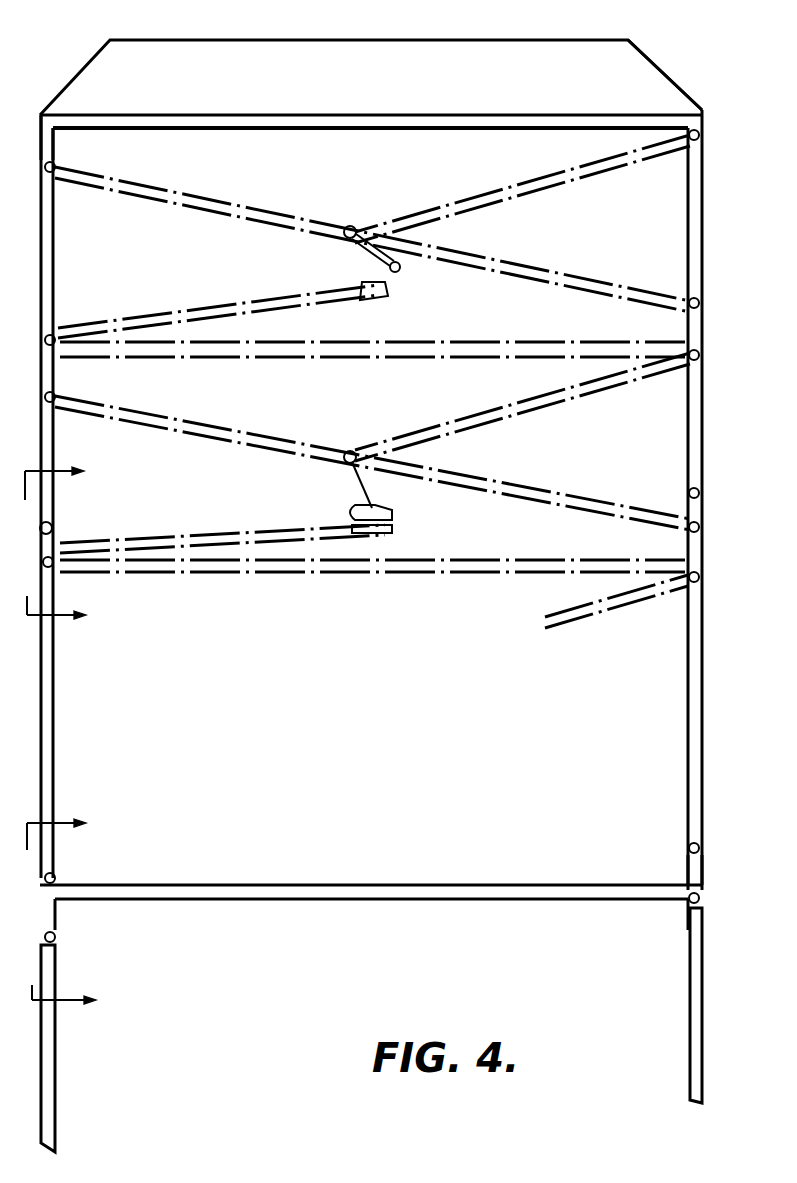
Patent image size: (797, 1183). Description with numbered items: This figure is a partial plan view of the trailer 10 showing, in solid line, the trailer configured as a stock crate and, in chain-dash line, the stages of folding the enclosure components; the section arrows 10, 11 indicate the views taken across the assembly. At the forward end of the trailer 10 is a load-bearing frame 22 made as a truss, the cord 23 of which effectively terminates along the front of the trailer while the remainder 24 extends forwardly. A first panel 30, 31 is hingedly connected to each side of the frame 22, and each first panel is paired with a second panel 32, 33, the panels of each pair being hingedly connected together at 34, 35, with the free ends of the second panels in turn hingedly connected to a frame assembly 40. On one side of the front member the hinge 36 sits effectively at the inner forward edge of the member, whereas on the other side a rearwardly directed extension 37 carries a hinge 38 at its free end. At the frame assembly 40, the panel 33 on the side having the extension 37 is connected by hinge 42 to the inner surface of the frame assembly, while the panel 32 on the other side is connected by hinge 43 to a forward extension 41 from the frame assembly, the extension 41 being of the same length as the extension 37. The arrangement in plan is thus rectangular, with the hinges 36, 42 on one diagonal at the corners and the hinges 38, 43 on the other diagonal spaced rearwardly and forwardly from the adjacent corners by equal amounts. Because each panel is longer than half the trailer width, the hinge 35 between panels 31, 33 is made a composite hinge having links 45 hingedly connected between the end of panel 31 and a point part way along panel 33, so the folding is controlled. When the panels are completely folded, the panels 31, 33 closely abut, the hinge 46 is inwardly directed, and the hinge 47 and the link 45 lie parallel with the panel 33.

The trailer 10 is at (73, 545).
The lower panel section 11 is at (77, 914).
The frame 22 is at (662, 66).
The cord 23 is at (560, 115).
The remainder 24 is at (438, 60).
The panel 30 is at (572, 172).
The panel 31 is at (162, 208).
The panel 32 is at (605, 275).
The panel 33 is at (184, 292).
The hinge 34 is at (340, 228).
The hinge 35 is at (405, 272).
The hinge 36 is at (690, 138).
The rearwardly directed extension 37 is at (45, 135).
The hinge 38 is at (58, 166).
The frame assembly 40 is at (270, 352).
The forward extension 41 is at (694, 868).
The hinge 42 is at (56, 878).
The hinge 43 is at (688, 846).
The links 45 is at (340, 262).
The hinge 46 is at (392, 512).
The hinge 47 is at (375, 296).